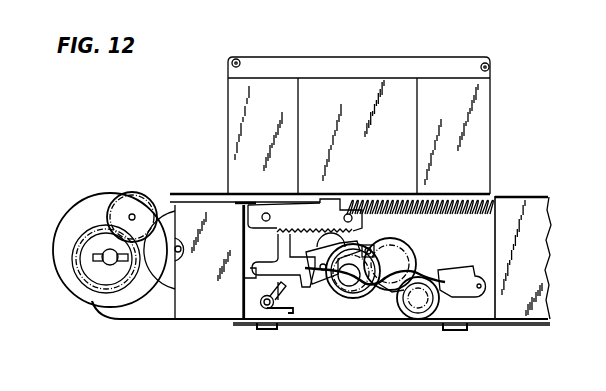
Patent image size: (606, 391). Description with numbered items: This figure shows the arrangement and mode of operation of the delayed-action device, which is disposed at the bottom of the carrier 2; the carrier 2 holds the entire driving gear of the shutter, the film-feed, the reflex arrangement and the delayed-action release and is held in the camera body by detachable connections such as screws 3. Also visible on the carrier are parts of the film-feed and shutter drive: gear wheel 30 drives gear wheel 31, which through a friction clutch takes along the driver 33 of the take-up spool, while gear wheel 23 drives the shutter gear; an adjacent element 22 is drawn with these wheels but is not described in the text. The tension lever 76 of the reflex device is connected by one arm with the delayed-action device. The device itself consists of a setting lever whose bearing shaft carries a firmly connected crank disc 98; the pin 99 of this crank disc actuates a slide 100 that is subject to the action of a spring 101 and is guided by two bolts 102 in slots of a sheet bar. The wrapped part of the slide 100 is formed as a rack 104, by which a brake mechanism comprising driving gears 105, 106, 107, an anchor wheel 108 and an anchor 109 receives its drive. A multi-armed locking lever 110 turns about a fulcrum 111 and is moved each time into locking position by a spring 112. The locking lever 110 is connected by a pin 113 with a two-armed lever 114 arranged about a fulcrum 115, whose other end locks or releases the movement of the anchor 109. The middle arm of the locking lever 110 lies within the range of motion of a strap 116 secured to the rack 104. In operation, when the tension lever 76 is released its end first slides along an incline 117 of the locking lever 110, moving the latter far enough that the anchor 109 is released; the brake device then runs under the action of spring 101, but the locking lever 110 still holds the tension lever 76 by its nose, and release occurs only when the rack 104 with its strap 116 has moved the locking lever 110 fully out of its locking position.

The carrier 2 is at (479, 110).
The screws 3 is at (232, 62).
The take-up reel 22 is at (83, 236).
The gear wheel 23 is at (165, 268).
The gear wheel 30 is at (128, 205).
The gear wheel 31 is at (97, 248).
The driver 33 is at (100, 257).
The tension lever 76 is at (244, 292).
The crank disc 98 is at (370, 249).
The pin 99 is at (347, 214).
The slide 100 is at (267, 213).
The spring 101 is at (362, 212).
The bolts 102 is at (263, 193).
The rack 104 is at (300, 214).
The driving gear 105 is at (330, 284).
The driving gear 106 is at (352, 293).
The driving gear 107 is at (386, 300).
The anchor wheel 108 is at (418, 304).
The anchor 109 is at (486, 298).
The locking lever 110 is at (255, 270).
The fulcrum 111 is at (266, 305).
The spring 112 is at (278, 305).
The pin 113 is at (322, 288).
The two-armed lever 114 is at (378, 290).
The fulcrum 115 is at (372, 205).
The strap 116 is at (270, 267).
The incline 117 is at (177, 213).